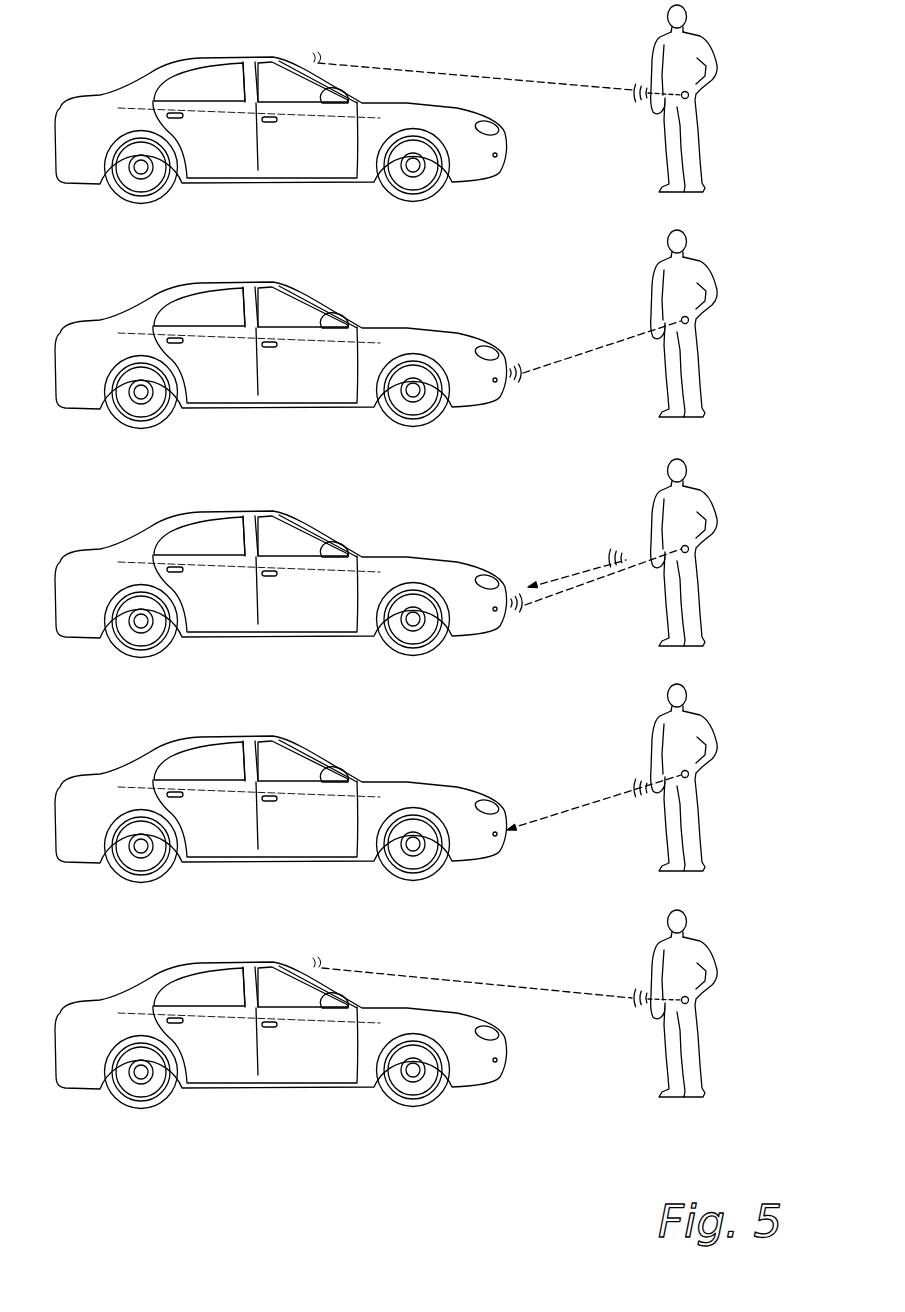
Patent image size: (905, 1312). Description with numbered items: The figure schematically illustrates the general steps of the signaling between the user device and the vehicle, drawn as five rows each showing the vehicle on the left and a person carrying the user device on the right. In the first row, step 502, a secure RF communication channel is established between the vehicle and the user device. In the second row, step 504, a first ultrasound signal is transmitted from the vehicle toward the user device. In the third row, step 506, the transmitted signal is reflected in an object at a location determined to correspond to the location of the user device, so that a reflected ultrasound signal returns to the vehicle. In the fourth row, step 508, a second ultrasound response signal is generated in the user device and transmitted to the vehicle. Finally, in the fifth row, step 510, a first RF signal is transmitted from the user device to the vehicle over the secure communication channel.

The secure RF communication channel establishment step 502 is at (724, 124).
The ultrasound signal transmission step 504 is at (724, 338).
The ultrasound reflection step 506 is at (724, 558).
The response signal generation and transmission step 508 is at (724, 786).
The RF signal transmission step 510 is at (724, 1014).